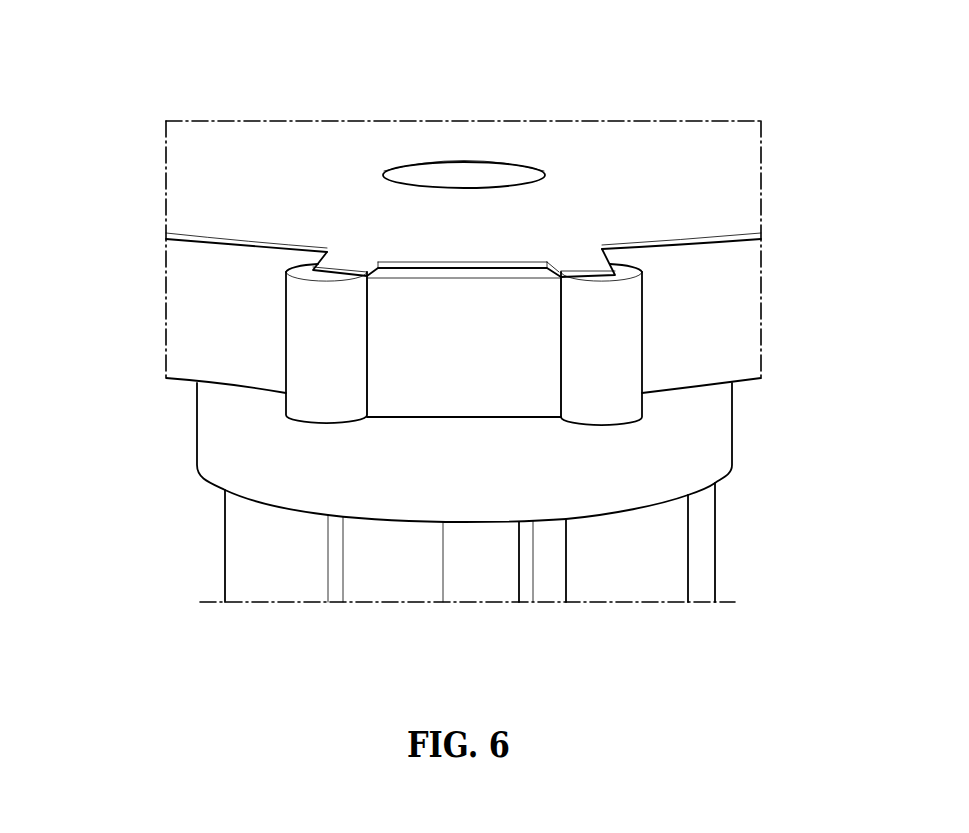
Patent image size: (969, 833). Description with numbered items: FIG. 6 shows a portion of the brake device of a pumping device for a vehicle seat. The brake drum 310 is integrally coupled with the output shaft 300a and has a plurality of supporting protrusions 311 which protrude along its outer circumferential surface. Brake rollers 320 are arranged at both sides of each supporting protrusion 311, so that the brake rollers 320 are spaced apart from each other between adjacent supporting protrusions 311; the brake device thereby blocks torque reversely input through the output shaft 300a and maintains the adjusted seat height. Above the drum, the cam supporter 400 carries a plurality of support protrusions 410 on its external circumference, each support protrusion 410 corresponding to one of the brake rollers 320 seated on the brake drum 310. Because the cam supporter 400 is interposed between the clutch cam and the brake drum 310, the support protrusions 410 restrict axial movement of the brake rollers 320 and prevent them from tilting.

The cam supporter 400 is at (645, 167).
The support protrusion 410 is at (345, 267).
The brake drum 310 is at (211, 323).
The brake roller 320 is at (622, 345).
The supporting protrusion 311 is at (483, 372).
The output shaft 300a is at (288, 565).